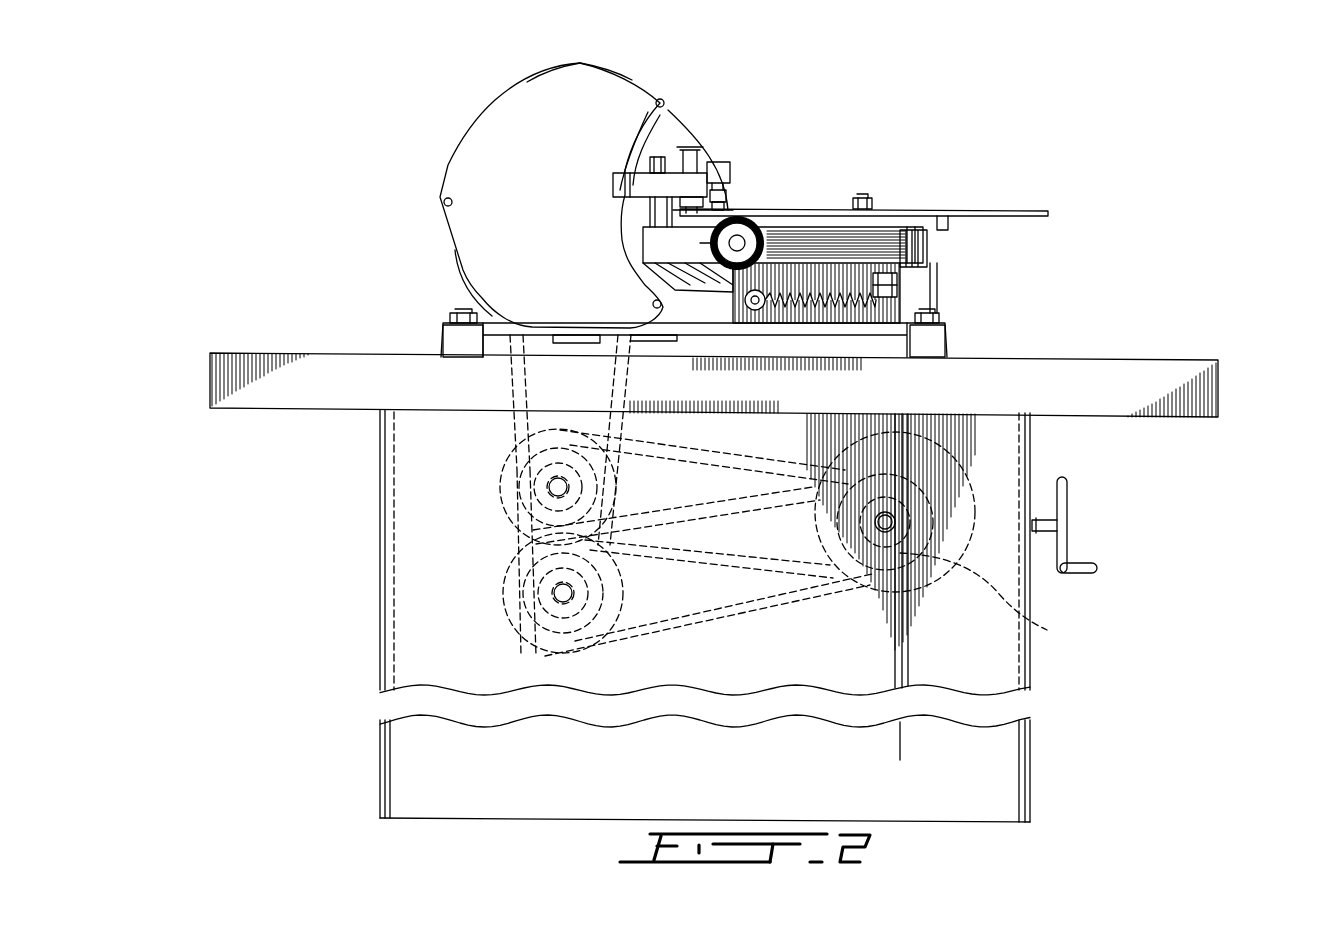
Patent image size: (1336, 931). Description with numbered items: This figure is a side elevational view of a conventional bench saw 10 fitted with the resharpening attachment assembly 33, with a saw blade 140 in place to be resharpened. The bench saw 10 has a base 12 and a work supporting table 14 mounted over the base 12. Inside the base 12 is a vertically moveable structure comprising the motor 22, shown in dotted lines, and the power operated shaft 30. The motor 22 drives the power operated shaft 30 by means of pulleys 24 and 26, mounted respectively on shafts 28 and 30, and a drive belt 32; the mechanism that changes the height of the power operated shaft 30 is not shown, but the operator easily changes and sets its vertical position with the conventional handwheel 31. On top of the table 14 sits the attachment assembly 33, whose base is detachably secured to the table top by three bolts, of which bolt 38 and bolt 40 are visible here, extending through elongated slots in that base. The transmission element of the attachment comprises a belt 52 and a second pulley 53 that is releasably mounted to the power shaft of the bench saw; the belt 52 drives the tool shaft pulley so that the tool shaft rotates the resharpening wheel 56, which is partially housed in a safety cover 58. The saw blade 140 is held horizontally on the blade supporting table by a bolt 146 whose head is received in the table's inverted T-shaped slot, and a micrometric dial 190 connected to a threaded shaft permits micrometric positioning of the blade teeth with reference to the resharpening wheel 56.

The bench saw 10 is at (1118, 247).
The base 12 is at (1031, 782).
The work supporting table 14 is at (1158, 359).
The motor 22 is at (935, 438).
The pulley 24 is at (1030, 622).
The pulley 26 is at (553, 637).
The shaft 28 is at (900, 567).
The power operated shaft 30 is at (512, 598).
The handwheel 31 is at (1068, 508).
The drive belt 32 is at (700, 617).
The attachment assembly 33 is at (583, 61).
The bolt 38 is at (932, 312).
The bolt 40 is at (460, 312).
The belt 52 is at (512, 342).
The second pulley 53 is at (527, 617).
The resharpening wheel 56 is at (640, 153).
The safety cover 58 is at (522, 173).
The saw blade 140 is at (990, 208).
The bolt 146 is at (880, 205).
The micrometric dial 190 is at (741, 217).